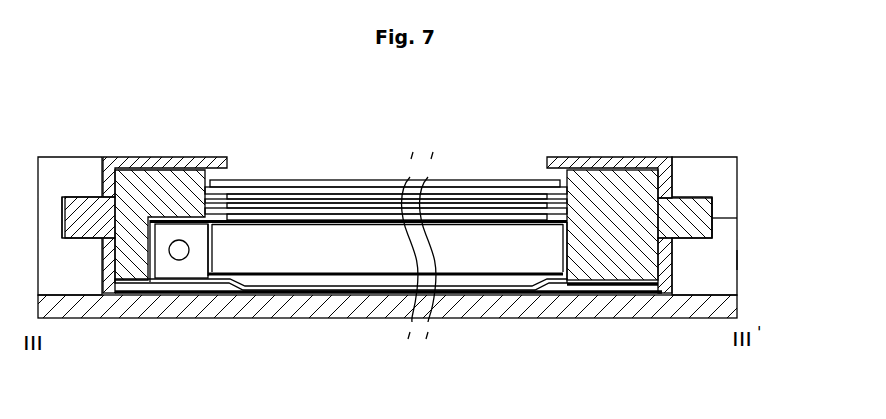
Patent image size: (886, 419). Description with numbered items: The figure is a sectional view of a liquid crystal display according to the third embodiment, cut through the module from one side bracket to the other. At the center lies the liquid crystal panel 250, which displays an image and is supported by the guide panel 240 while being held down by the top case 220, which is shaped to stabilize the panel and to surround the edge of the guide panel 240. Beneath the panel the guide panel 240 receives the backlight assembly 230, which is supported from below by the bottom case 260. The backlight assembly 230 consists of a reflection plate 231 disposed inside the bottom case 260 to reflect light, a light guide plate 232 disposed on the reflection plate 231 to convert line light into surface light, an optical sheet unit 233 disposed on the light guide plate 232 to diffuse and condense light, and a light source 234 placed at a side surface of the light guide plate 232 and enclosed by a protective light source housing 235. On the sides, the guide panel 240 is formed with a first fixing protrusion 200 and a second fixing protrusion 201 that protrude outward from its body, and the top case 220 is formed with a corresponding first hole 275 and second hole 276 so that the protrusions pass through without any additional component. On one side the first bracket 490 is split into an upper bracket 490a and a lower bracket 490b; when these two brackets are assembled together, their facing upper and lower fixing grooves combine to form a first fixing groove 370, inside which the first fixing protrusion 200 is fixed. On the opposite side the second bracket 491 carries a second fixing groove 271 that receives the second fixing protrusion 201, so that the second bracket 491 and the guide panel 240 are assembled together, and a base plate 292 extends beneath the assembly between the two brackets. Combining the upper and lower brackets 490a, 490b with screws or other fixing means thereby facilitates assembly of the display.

The first fixing protrusion 200 is at (683, 205).
The second fixing protrusion 201 is at (82, 203).
The top case 220 is at (207, 163).
The backlight assembly 230 is at (369, 363).
The reflection plate 231 is at (360, 278).
The light guide plate 232 is at (325, 258).
The optical sheet unit 233 is at (274, 210).
The light source 234 is at (179, 260).
The light source housing 235 is at (213, 284).
The guide panel 240 is at (577, 286).
The liquid crystal panel 250 is at (468, 175).
The bottom case 260 is at (608, 294).
The second fixing groove 271 is at (66, 197).
The first hole 275 is at (647, 200).
The second hole 276 is at (122, 205).
The base plate 292 is at (733, 303).
The first fixing groove 370 is at (707, 200).
The first bracket 490 is at (805, 163).
The upper bracket 490a is at (730, 180).
The lower bracket 490b is at (733, 259).
The second bracket 491 is at (78, 282).